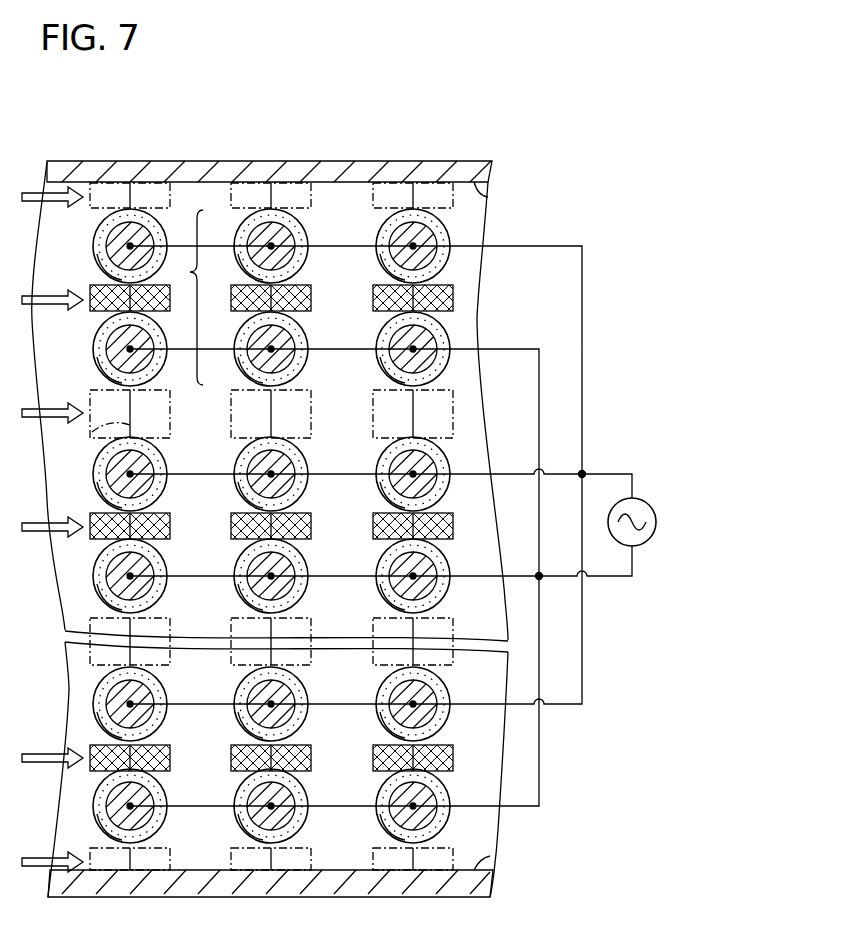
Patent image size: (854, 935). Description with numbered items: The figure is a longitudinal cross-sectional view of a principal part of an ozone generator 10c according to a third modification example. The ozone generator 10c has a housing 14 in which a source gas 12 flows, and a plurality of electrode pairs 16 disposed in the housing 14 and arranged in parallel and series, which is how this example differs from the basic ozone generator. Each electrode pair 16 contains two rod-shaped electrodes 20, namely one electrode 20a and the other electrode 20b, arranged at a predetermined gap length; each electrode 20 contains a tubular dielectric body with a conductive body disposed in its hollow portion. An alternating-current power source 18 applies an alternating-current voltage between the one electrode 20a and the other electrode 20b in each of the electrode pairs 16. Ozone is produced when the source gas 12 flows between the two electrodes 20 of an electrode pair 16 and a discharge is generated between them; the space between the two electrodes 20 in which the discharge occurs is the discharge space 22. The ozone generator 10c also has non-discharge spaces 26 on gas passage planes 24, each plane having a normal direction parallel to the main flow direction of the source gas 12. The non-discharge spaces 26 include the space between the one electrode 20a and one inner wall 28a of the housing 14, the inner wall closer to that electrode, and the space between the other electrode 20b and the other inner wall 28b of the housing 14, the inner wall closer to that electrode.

The ozone generator 10c is at (238, 79).
The source gas 12 is at (39, 198).
The housing 14 is at (293, 161).
The electrode pair 16 is at (140, 298).
The alternating-current power source 18 is at (648, 505).
The electrode 20 is at (163, 268).
The one electrode 20a is at (158, 225).
The other electrode 20b is at (93, 359).
The discharge space 22 is at (88, 292).
The gas passage plane 24 is at (155, 183).
The non-discharge space 26 is at (195, 186).
The one inner wall 28a is at (486, 192).
The other inner wall 28b is at (490, 856).